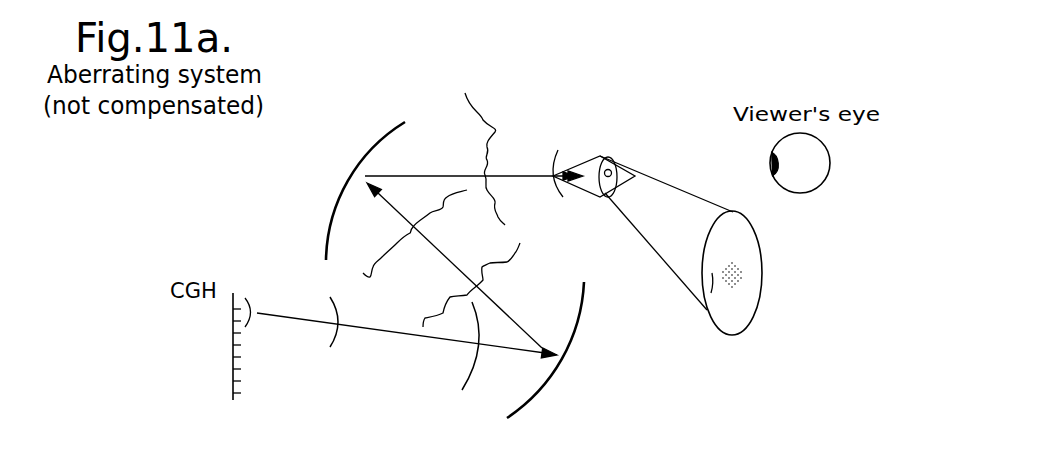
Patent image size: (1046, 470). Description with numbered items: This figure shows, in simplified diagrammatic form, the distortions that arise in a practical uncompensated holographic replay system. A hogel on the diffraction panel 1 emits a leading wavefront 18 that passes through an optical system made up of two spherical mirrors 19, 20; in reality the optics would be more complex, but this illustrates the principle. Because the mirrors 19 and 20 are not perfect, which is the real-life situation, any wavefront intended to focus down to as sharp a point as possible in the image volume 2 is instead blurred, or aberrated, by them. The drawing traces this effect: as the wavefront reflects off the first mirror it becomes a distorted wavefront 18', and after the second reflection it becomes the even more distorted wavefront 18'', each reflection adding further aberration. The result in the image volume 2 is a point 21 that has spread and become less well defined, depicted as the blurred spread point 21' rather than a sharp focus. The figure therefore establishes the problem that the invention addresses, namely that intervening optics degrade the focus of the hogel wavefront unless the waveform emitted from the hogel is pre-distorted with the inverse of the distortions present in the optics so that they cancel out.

The diffraction panel 1 is at (232, 322).
The image volume 2 is at (598, 157).
The leading wavefront 18 is at (327, 367).
The distorted leading wavefront 18' is at (441, 258).
The further distorted leading wavefront 18'' is at (477, 145).
The spherical mirror 19 is at (557, 373).
The spherical mirror 20 is at (360, 158).
The point 21 is at (583, 192).
The spread point 21' is at (723, 299).